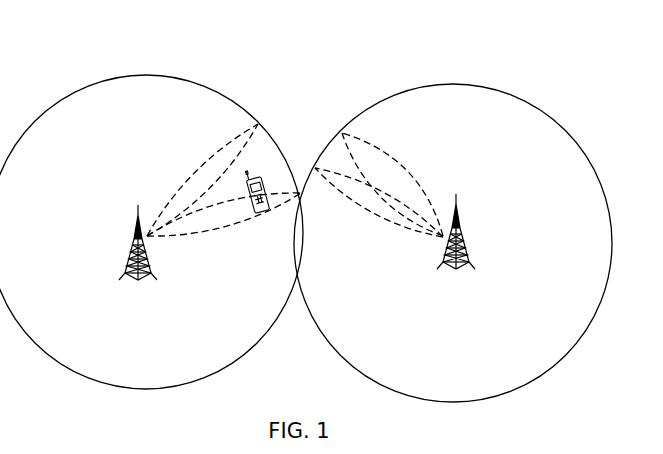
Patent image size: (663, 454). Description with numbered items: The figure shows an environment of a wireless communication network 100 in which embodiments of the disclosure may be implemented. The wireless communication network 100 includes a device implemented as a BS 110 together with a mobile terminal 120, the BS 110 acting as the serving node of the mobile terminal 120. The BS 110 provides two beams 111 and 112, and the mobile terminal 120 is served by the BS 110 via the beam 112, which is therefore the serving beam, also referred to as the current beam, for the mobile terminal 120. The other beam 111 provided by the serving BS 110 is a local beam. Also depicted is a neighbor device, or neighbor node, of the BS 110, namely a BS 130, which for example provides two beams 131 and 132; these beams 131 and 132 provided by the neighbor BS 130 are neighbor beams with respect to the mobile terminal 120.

The wireless communication network 100 is at (99, 29).
The base station (BS) 110 is at (137, 281).
The beam 111 is at (195, 168).
The beam 112 is at (223, 228).
The mobile terminal 120 is at (262, 177).
The neighbor base station (BS) 130 is at (453, 272).
The beam 131 is at (400, 170).
The beam 132 is at (372, 215).